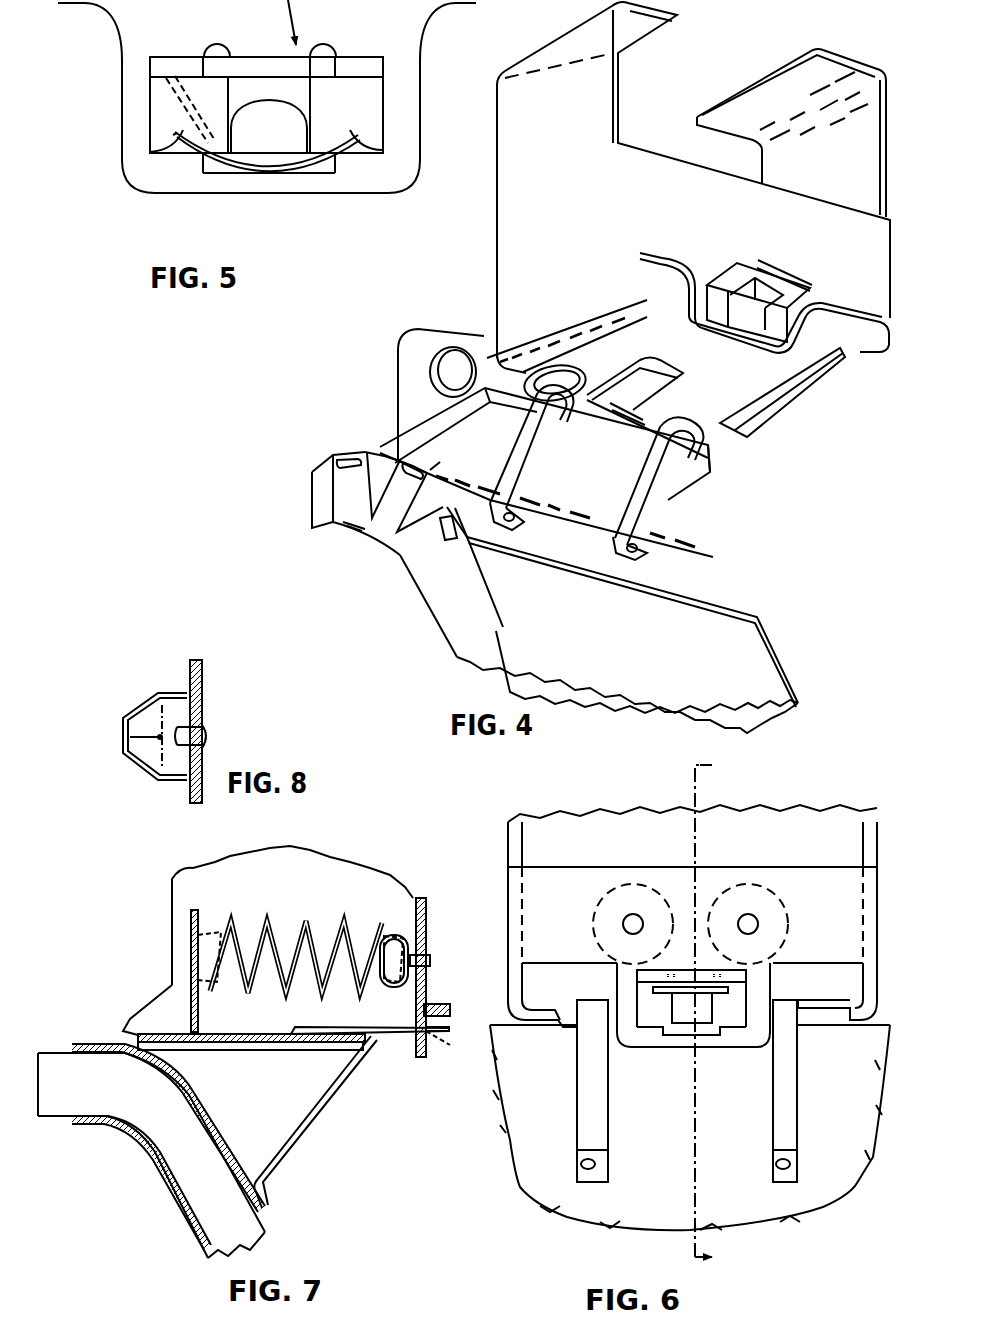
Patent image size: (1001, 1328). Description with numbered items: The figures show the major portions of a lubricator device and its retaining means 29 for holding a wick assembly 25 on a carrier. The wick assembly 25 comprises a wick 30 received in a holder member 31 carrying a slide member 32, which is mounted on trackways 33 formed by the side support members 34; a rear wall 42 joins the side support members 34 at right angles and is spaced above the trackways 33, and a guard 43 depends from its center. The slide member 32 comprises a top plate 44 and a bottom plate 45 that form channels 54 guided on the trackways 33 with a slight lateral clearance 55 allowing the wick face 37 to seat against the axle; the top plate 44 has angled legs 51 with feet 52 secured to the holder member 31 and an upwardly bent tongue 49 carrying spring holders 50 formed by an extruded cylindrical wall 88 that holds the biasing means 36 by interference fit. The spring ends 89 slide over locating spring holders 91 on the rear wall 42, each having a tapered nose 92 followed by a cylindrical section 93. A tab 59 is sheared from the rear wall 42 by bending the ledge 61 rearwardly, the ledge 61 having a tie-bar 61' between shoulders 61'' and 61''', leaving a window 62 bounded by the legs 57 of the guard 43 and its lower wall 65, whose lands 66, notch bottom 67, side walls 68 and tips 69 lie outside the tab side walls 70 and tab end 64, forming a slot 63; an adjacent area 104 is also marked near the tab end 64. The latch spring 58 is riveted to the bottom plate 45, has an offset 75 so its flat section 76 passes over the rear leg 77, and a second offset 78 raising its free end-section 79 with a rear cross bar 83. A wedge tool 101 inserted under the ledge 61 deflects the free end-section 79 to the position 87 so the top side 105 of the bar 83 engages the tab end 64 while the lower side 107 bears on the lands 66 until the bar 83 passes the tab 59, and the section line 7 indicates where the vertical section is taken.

In FIG. 6, the section line 7— 7 is at (721, 1008).
In FIG. 4, the wick assembly 25 is at (405, 585).
In FIG. 7, the retaining means 29 is at (418, 1068).
In FIG. 4, the wick 30 is at (755, 670).
In FIG. 4, the holder member 31 is at (355, 513).
In FIG. 7, the holder member 31 is at (85, 1124).
In FIG. 4, the slide member 32 is at (380, 428).
In FIG. 4, the trackways 33 is at (640, 319).
In FIG. 4, the side support members 34 is at (572, 168).
In FIG. 7, the biasing means 36 is at (306, 921).
In FIG. 4, the wick face 37 is at (311, 500).
In FIG. 7, the wick face 37 is at (40, 1050).
In FIG. 4, the rear wall 42 is at (703, 208).
In FIG. 7, the rear wall 42 is at (426, 944).
In FIG. 6, the rear wall 42 is at (850, 908).
In FIG. 5, the guard 43 is at (416, 186).
In FIG. 4, the guard 43 is at (812, 346).
In FIG. 6, the guard 43 is at (651, 1055).
In FIG. 6, the top plate 44 is at (837, 1005).
In FIG. 4, the bottom plate 45 is at (593, 443).
In FIG. 4, the tongue 49 is at (413, 358).
In FIG. 7, the tongue 49 is at (182, 1004).
In FIG. 4, the spring holders 50 is at (445, 345).
In FIG. 7, the spring holders 50 is at (205, 919).
In FIG. 7, the angled legs 51 is at (303, 1141).
In FIG. 7, the feet 52 is at (267, 1201).
In FIG. 4, the channels 54 is at (716, 461).
In FIG. 6, the lateral clearance 55 is at (812, 1030).
In FIG. 5, the legs of the guard 57 is at (132, 105).
In FIG. 4, the latch spring 58 is at (594, 378).
In FIG. 7, the latch spring 58 is at (229, 1035).
In FIG. 6, the latch spring 58 is at (718, 994).
In FIG. 5, the tab 59 is at (320, 93).
In FIG. 4, the tab 59 is at (750, 313).
In FIG. 6, the tab 59 is at (700, 1010).
In FIG. 4, the ledge 61 is at (775, 296).
In FIG. 7, the ledge 61 is at (448, 985).
In FIG. 6, the ledge 61 is at (691, 988).
In FIG. 5, the tie-bar 61' is at (269, 47).
In FIG. 4, the tie-bar 61' is at (783, 245).
In FIG. 5, the shoulders 61'' is at (176, 46).
In FIG. 4, the shoulders 61'' is at (732, 248).
In FIG. 5, the clip side portion 61''' is at (377, 43).
In FIG. 4, the clip side portion 61''' is at (831, 294).
In FIG. 5, the window 62 is at (165, 123).
In FIG. 4, the window 62 is at (712, 302).
In FIG. 5, the slot 63 is at (317, 175).
In FIG. 5, the tab end 64 is at (273, 153).
In FIG. 5, the lower wall 65 is at (263, 190).
In FIG. 5, the lands 66 is at (150, 133).
In FIG. 5, the notch bottom 67 is at (240, 173).
In FIG. 5, the side walls of the notch 68 is at (333, 157).
In FIG. 5, the tips 69 is at (205, 173).
In FIG. 5, the tab side walls 70 is at (230, 92).
In FIG. 7, the spring offset 75 is at (295, 1036).
In FIG. 7, the flat section 76 is at (348, 1027).
In FIG. 7, the rear leg 77 is at (329, 1050).
In FIG. 7, the second offset 78 is at (384, 1031).
In FIG. 4, the free end-section 79 is at (695, 370).
In FIG. 7, the free end-section 79 is at (456, 1017).
In FIG. 5, the rear cross bar 83 is at (206, 168).
In FIG. 7, the deflected position 87 is at (443, 1052).
In FIG. 7, the cylindrical wall 88 is at (221, 930).
In FIG. 7, the spring ends 89 is at (371, 919).
In FIG. 8, the locating spring holders 91 is at (154, 790).
In FIG. 7, the locating spring holders 91 is at (405, 985).
In FIG. 8, the tapered nose 92 is at (147, 703).
In FIG. 8, the cylindrical section 93 is at (175, 690).
In FIG. 5, the wedge tool 101 is at (178, 109).
In FIG. 5, the edge 104 is at (329, 109).
In FIG. 5, the top side of the bar 105 is at (330, 150).
In FIG. 5, the lower side of the latch spring 107 is at (182, 154).